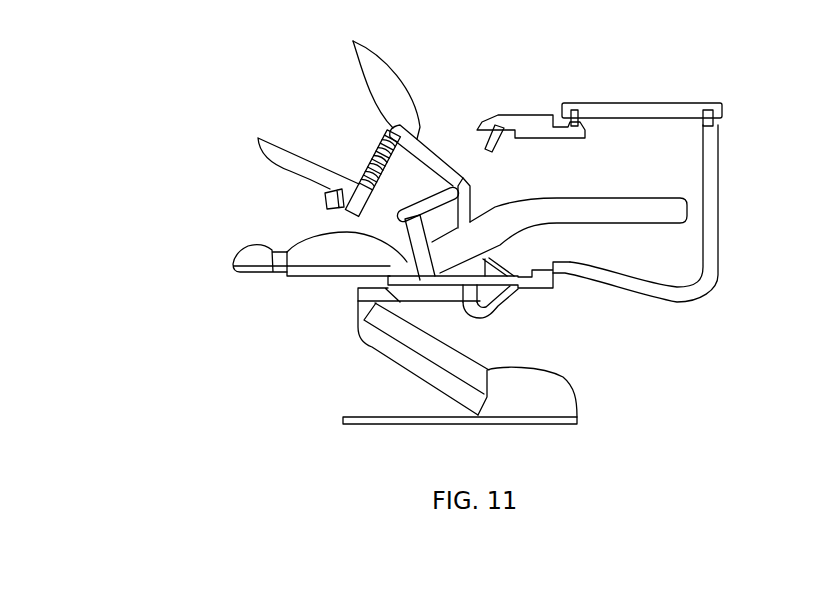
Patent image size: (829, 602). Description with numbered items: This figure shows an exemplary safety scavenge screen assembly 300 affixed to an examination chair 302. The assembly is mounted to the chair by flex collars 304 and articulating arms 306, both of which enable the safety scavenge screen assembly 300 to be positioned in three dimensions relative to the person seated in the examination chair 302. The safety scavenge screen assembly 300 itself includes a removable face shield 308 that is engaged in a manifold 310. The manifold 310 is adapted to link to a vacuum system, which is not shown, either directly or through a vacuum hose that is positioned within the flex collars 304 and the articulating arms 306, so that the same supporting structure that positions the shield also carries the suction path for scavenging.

The safety scavenge screen assembly 300 is at (123, 137).
The examination chair 302 is at (330, 277).
The flex collars 304 is at (367, 168).
The articulating arms 306 is at (353, 41).
The removable face shield 308 is at (301, 169).
The manifold 310 is at (352, 200).